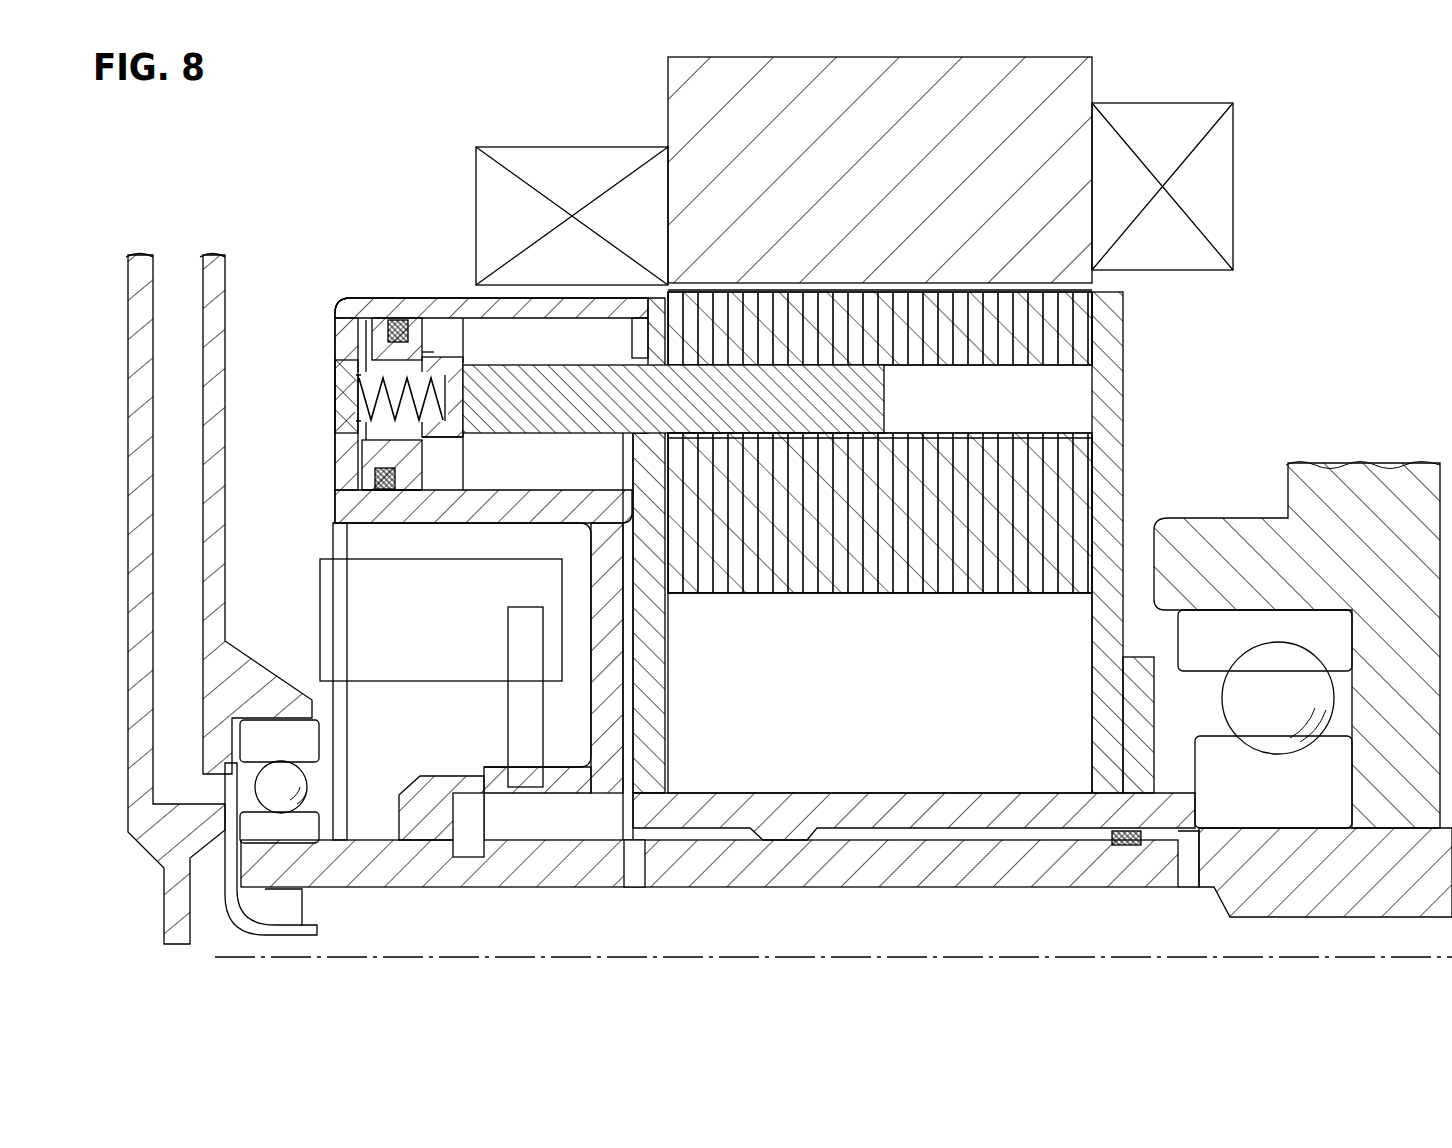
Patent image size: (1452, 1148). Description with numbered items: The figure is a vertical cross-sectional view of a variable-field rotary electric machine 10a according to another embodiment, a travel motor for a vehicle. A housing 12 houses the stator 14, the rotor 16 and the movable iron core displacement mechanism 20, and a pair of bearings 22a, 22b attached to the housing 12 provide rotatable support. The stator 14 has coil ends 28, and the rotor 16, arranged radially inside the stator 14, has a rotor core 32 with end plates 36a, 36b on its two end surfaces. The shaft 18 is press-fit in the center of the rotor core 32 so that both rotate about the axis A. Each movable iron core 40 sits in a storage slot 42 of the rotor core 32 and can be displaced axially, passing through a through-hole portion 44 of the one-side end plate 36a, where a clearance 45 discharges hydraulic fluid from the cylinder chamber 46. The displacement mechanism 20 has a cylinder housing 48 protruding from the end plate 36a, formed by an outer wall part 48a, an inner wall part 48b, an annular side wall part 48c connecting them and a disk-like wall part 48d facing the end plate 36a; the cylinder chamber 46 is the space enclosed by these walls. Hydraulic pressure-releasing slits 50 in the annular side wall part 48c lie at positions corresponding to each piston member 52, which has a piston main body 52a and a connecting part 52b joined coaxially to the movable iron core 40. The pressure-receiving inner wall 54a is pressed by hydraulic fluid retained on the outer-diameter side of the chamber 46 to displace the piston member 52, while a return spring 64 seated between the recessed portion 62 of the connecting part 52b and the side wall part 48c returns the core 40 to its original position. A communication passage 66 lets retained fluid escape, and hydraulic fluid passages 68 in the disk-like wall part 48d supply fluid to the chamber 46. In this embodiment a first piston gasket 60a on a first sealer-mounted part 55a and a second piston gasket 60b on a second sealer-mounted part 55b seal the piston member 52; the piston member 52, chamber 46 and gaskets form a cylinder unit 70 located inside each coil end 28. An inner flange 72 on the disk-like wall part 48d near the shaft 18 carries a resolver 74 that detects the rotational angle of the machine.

The variable-field rotary electric machine 10a is at (355, 135).
The housing 12 is at (232, 580).
The stator 14 is at (662, 82).
The rotor 16 is at (1130, 522).
The shaft 18 is at (870, 875).
The movable iron core displacement mechanism 20 is at (450, 290).
The bearing 22a is at (300, 787).
The bearing 22b is at (1255, 702).
The coil end 28 is at (575, 160).
The rotor core 32 is at (1055, 500).
The end plate 36a is at (660, 760).
The end plate 36b is at (1095, 650).
The movable iron core 40 is at (880, 400).
The storage slot 42 is at (923, 542).
The through-hole portion 44 is at (635, 348).
The clearance 45 is at (660, 440).
The cylinder chamber 46 is at (565, 345).
The cylinder housing 48 is at (496, 535).
The outer wall part 48a is at (392, 298).
The inner wall part 48b is at (510, 508).
The annular side wall part 48c is at (330, 503).
The disk-like wall part 48d is at (612, 640).
The hydraulic pressure-releasing slit 50 is at (340, 360).
The piston member 52 is at (440, 418).
The piston main body 52a is at (380, 492).
The connecting part 52b is at (458, 430).
The inner wall of sealer-mounted part 54a is at (428, 352).
The first sealer-mounted part 55a is at (340, 300).
The second sealer-mounted part 55b is at (393, 495).
The first piston gasket 60a is at (397, 330).
The second piston gasket 60b is at (385, 480).
The recessed portion 62 is at (435, 440).
The return spring 64 is at (370, 405).
The communication passage 66 is at (357, 375).
The hydraulic fluid passage 68 is at (625, 700).
The cylinder unit 70 is at (330, 527).
The inner flange 72 is at (478, 790).
The resolver 74 is at (410, 670).
The axis A is at (1005, 956).